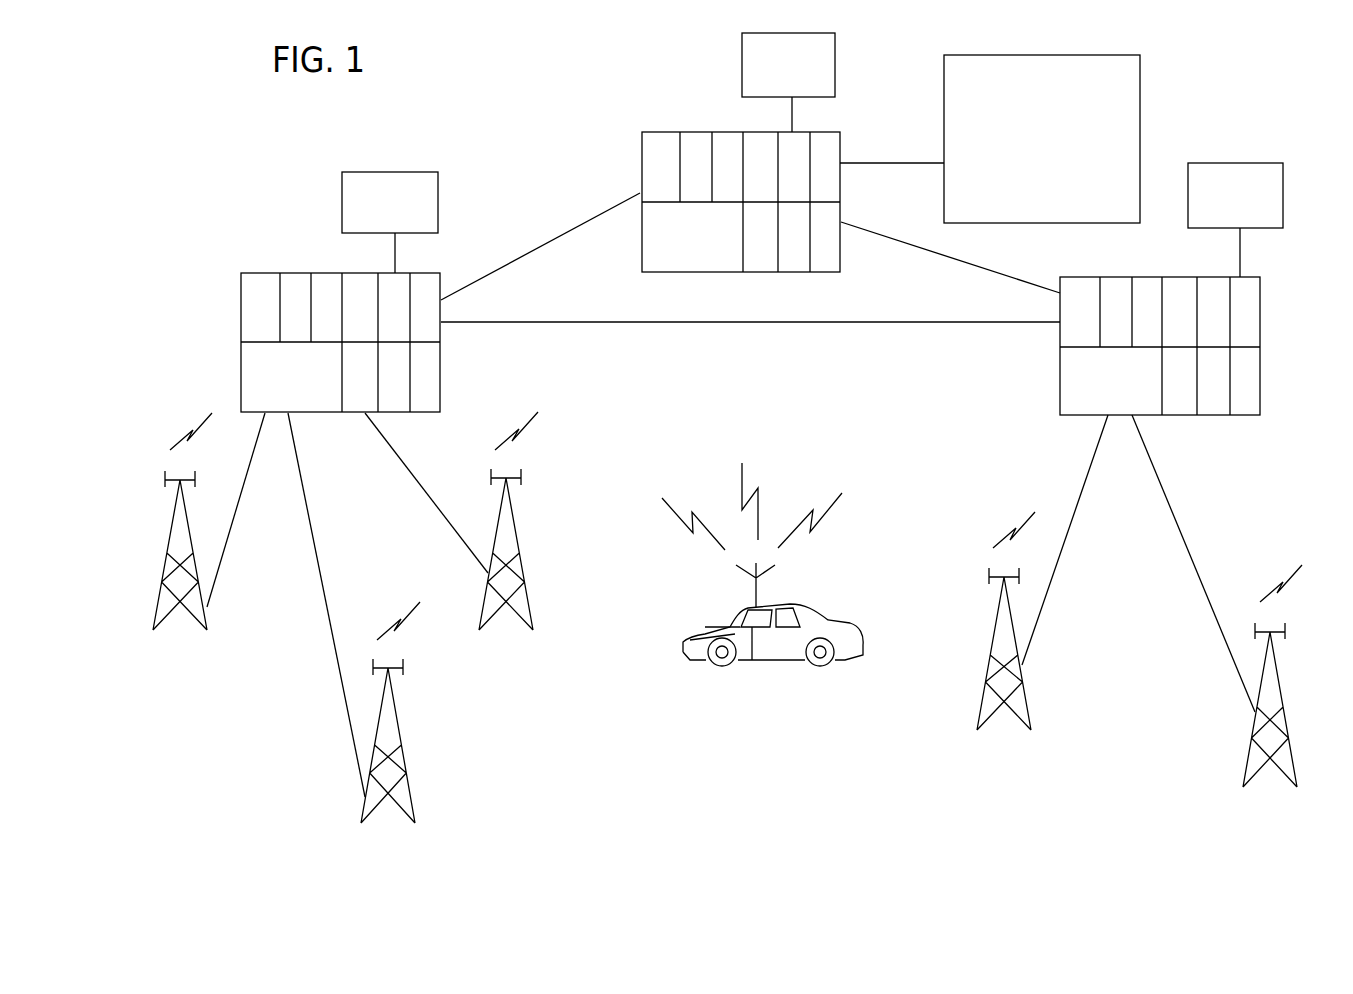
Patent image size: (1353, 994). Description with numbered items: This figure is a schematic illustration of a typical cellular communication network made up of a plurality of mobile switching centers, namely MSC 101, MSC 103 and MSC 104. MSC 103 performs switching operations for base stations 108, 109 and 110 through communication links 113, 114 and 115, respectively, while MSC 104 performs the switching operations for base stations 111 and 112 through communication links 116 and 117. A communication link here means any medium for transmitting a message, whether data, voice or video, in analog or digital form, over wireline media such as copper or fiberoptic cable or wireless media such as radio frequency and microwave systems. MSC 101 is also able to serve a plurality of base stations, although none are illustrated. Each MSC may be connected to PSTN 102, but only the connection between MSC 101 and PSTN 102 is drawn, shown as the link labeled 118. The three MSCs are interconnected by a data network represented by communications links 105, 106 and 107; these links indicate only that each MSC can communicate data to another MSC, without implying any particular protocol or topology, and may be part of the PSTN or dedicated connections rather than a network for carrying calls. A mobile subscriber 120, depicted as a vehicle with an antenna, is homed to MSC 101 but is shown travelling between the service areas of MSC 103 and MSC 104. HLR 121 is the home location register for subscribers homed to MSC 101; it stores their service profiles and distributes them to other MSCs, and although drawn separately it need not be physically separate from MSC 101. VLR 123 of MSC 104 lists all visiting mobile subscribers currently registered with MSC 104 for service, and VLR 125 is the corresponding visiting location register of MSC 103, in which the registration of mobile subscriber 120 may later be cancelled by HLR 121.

The MSC 101 is at (642, 152).
The PSTN 102 is at (1140, 80).
The MSC 103 is at (440, 370).
The MSC 104 is at (1260, 378).
The communications link 105 is at (583, 222).
The communications link 106 is at (942, 258).
The communications link 107 is at (843, 322).
The base station 108 is at (188, 640).
The base station 109 is at (422, 750).
The base station 110 is at (540, 565).
The base station 111 is at (982, 645).
The base station 112 is at (1238, 730).
The communication link 113 is at (240, 500).
The communication link 114 is at (333, 590).
The communication link 115 is at (382, 438).
The communication link 116 is at (1077, 510).
The communication link 117 is at (1177, 522).
The MSC-PSTN link 118 is at (910, 163).
The mobile subscriber 120 is at (817, 618).
The HLR 121 is at (742, 72).
The visiting location register (VLR) 123 is at (1258, 163).
The VLR 125 is at (342, 195).